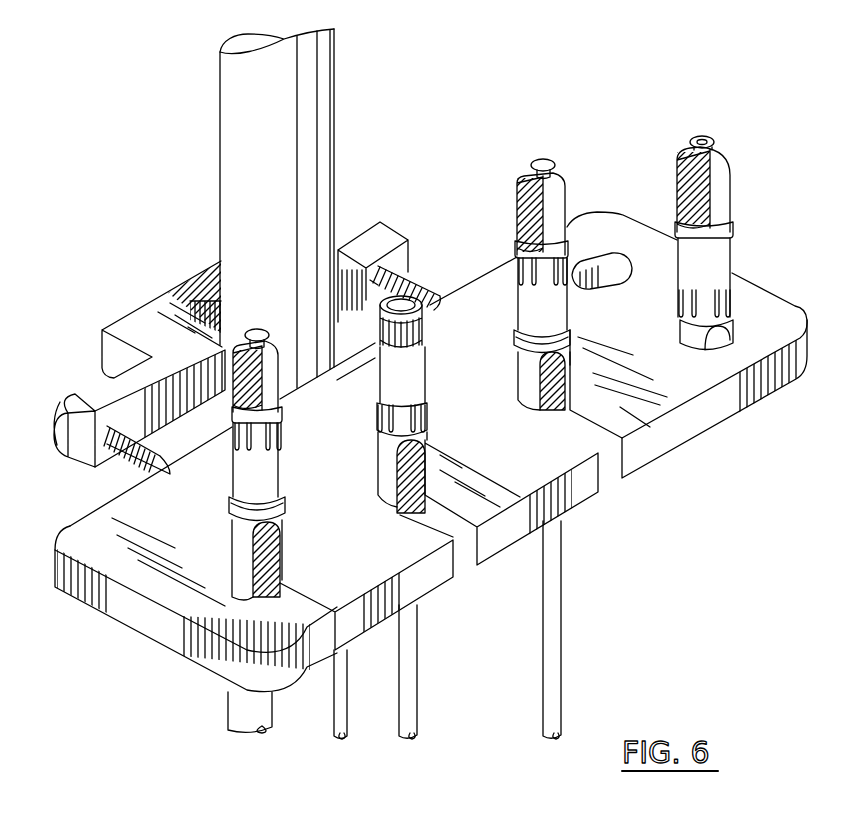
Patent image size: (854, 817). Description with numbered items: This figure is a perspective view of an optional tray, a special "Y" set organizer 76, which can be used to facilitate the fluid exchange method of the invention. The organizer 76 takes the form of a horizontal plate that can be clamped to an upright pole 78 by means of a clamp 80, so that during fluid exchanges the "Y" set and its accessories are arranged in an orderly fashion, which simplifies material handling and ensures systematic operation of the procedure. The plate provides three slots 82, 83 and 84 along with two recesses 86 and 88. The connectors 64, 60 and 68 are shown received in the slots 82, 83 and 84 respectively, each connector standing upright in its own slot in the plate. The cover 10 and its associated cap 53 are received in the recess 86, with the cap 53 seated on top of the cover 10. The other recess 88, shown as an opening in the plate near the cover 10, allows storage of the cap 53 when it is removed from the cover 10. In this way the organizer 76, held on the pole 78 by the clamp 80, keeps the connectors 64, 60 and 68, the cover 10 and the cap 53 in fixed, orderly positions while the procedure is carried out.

The upright pole 78 is at (325, 137).
The clamp 80 is at (168, 303).
The "Y" set organizer 76 is at (143, 588).
The connector 64 is at (268, 473).
The connector 60 is at (417, 383).
The connector 68 is at (563, 318).
The cap 53 is at (717, 185).
The cover 10 is at (717, 258).
The recess 86 is at (753, 307).
The slot 84 is at (627, 463).
The recess 88 is at (613, 263).
The slot 82 is at (320, 650).
The slot 83 is at (470, 543).